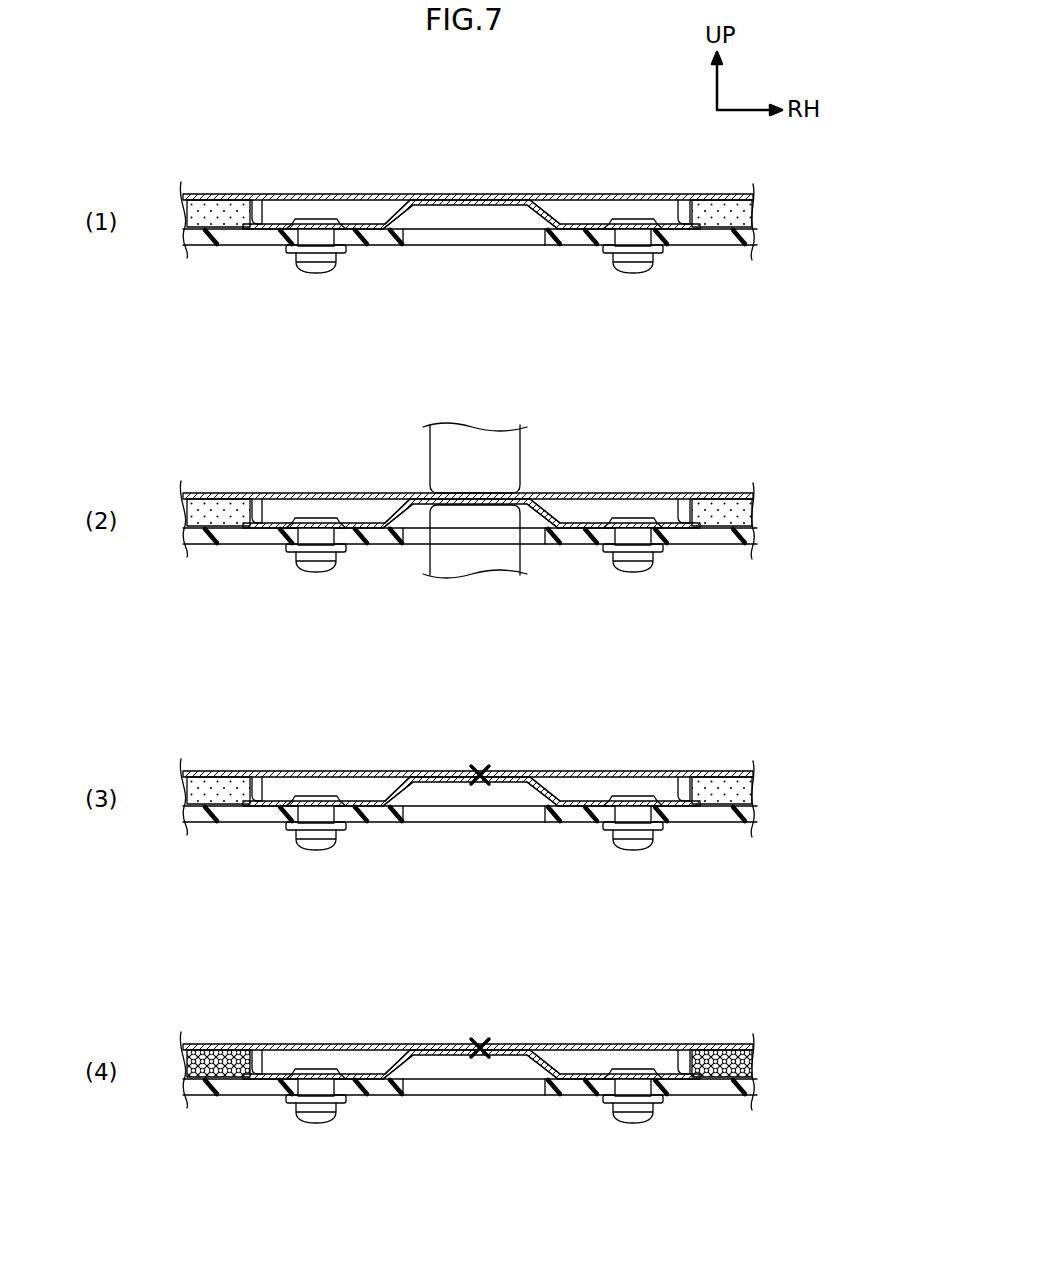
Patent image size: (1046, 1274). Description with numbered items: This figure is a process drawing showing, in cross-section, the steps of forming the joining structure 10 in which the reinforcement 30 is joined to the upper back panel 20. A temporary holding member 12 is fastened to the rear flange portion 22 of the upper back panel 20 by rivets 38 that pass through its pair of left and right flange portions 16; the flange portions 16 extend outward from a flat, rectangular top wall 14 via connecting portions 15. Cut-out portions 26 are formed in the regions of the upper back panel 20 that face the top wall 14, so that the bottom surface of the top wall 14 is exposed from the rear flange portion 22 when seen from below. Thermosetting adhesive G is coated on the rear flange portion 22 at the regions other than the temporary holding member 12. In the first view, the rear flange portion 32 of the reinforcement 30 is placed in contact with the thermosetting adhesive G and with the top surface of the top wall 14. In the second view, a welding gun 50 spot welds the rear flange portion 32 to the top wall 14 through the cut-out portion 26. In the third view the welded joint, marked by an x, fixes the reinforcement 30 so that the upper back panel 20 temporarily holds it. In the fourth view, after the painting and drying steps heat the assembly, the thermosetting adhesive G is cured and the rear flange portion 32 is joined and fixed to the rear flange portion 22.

The vehicle panel structure 10 is at (610, 436).
The temporary holding member 12 is at (553, 775).
The top wall 14 is at (490, 506).
The connecting portions 15 is at (404, 678).
The flange portions 16 is at (452, 601).
The upper back panel 20 is at (293, 698).
The rear flange portion 22 is at (651, 690).
The cut-out portions 26 is at (530, 545).
The reinforcement 30 is at (468, 587).
The rear flange portion 32 is at (471, 601).
The rivets 38 is at (474, 702).
The welding gun 50 is at (520, 438).
The thermosetting adhesive G is at (463, 604).